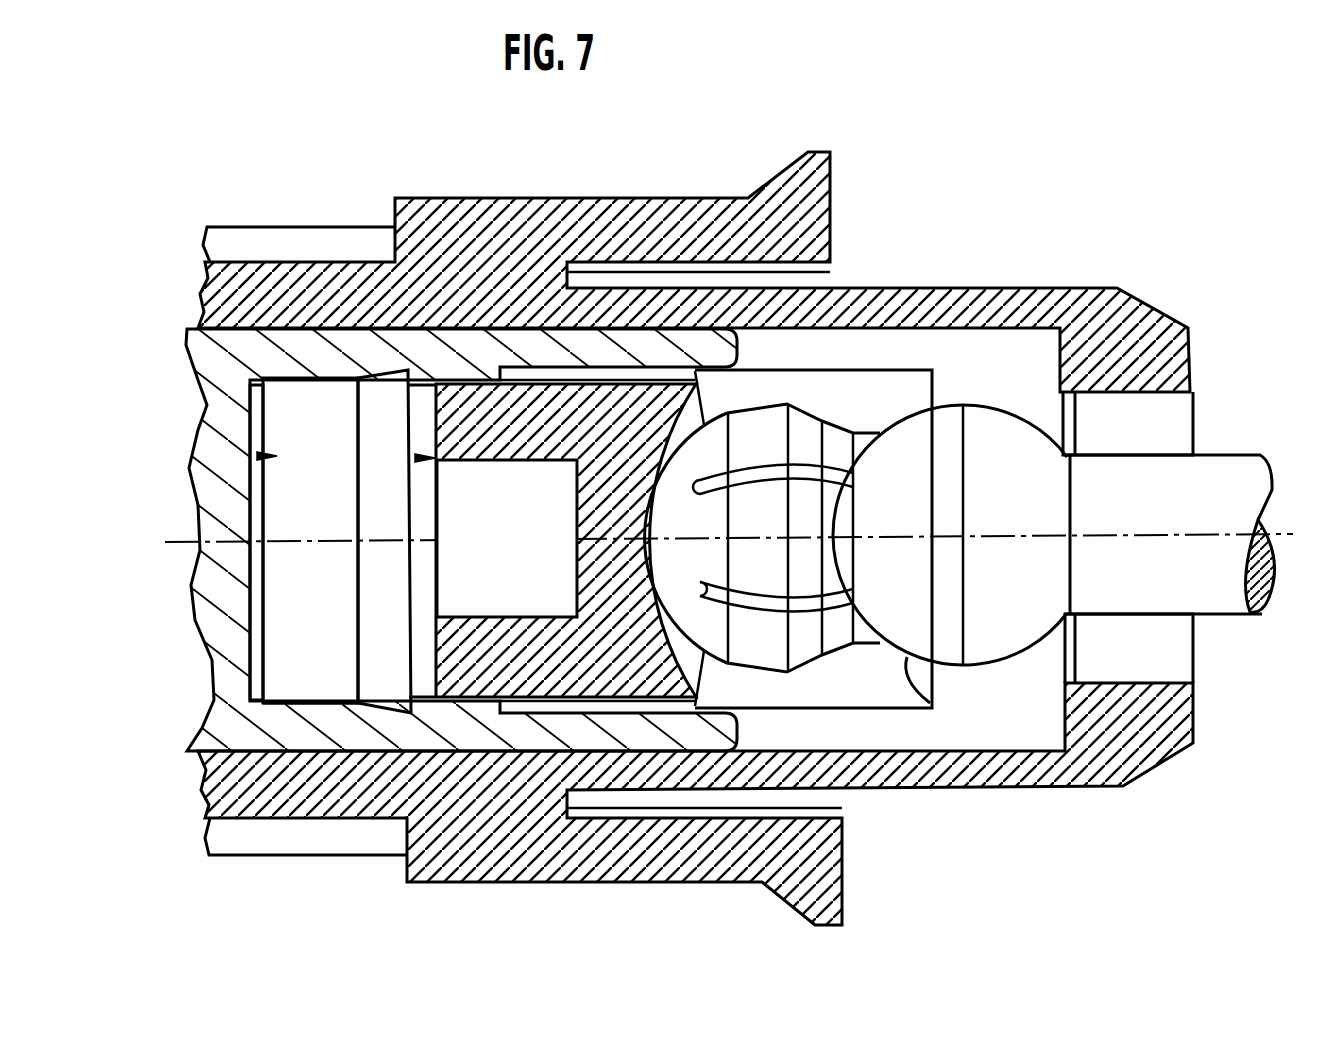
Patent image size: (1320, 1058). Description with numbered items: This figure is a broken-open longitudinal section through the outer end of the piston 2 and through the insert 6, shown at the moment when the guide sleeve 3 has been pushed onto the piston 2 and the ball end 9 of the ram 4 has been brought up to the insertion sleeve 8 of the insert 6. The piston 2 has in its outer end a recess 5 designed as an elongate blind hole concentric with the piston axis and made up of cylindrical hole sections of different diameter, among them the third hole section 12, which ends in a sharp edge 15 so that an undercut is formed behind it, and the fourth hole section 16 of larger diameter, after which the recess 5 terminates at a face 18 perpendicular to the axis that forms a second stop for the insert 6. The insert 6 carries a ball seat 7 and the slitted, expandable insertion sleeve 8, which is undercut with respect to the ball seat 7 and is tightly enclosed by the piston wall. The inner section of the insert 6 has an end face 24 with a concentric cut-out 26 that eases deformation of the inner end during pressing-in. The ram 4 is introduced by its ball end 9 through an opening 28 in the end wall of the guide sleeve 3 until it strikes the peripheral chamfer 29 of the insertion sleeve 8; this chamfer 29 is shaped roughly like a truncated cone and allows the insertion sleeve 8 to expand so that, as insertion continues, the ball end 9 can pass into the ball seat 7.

The piston 2 is at (200, 360).
The guide sleeve 3 is at (532, 215).
The ram 4 is at (1215, 592).
The recess 5 is at (258, 457).
The insert 6 is at (416, 458).
The ball seat 7 is at (648, 522).
The insertion sleeve 8 is at (897, 360).
The ball end 9 is at (889, 519).
The third hole section 12 is at (421, 387).
The sharp edge 15 is at (405, 690).
The fourth hole section 16 is at (293, 712).
The face 18 is at (252, 428).
The end face 24 is at (440, 640).
The concentric cut-out 26 is at (455, 577).
The opening 28 is at (1170, 418).
The peripheral chamfer 29 is at (930, 702).